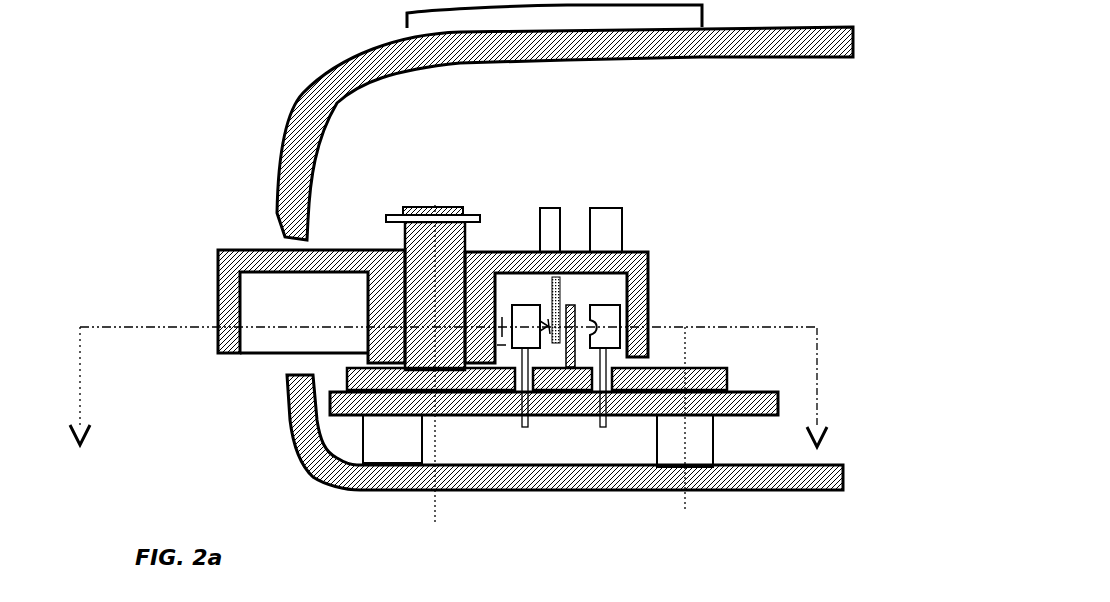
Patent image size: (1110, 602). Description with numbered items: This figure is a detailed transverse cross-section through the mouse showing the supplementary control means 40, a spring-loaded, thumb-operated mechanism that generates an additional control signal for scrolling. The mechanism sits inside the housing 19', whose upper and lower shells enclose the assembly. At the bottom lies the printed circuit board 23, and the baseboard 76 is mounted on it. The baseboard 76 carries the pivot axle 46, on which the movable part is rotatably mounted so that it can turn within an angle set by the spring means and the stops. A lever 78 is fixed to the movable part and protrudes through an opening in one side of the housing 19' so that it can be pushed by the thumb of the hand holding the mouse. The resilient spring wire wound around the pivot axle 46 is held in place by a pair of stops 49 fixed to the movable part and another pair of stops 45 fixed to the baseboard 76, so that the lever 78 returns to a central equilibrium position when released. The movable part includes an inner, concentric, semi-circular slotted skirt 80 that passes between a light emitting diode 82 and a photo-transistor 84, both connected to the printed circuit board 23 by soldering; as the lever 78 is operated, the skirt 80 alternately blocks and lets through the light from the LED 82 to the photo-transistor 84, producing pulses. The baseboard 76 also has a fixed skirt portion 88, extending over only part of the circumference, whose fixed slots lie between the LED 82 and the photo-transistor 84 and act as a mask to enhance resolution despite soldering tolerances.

The housing 19' is at (487, 247).
The supplementary control means 40 is at (138, 187).
The lever 78 is at (210, 292).
The pivot axle 46 is at (433, 198).
The light emitting diode 82 is at (525, 293).
The stops 49 is at (551, 205).
The stops 45 is at (609, 204).
The photo-transistor 84 is at (633, 268).
The baseboard 76 is at (715, 365).
The printed circuit board 23 is at (747, 383).
The slotted skirt 80 is at (552, 395).
The fixed skirt portion 88 is at (576, 367).